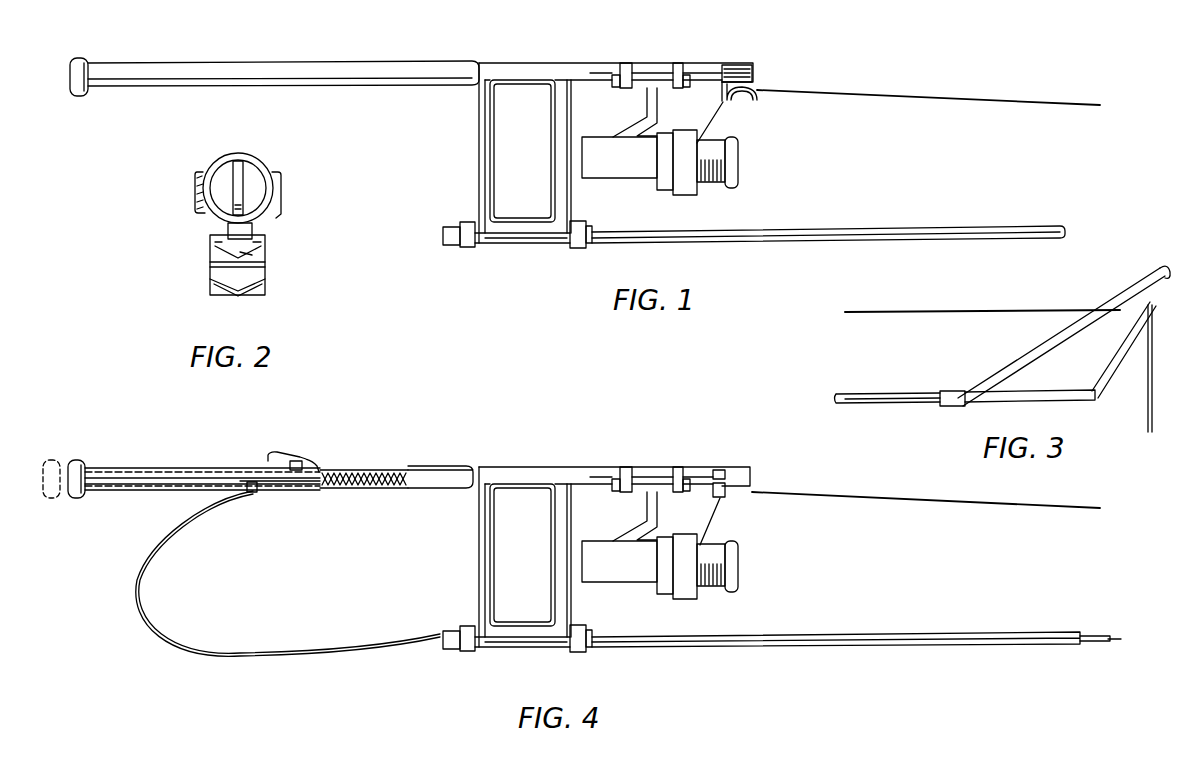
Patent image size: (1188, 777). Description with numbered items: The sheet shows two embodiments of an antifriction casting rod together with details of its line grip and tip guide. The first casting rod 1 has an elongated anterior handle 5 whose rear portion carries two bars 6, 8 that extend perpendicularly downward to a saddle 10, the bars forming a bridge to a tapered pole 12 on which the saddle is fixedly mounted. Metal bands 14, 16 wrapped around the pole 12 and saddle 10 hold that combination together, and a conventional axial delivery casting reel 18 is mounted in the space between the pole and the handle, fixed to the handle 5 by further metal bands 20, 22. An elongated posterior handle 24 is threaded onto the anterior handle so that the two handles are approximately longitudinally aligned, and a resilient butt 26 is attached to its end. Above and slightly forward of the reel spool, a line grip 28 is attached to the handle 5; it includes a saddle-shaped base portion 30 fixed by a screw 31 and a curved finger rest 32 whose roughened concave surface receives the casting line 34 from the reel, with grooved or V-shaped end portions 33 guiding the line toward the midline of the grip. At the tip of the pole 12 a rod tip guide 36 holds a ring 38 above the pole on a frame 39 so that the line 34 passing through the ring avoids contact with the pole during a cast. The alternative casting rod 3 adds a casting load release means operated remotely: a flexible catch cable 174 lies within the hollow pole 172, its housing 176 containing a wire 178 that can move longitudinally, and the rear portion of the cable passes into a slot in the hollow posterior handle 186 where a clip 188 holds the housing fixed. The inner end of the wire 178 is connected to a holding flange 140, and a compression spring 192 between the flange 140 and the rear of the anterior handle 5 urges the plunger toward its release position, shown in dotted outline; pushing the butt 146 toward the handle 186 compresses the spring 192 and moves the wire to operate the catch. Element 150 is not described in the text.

In FIG. 1, the antifriction casting rod 1 is at (415, 31).
In FIG. 4, the antifriction casting rod 3 is at (432, 431).
In FIG. 1, the anterior handle 5 is at (707, 63).
In FIG. 4, the anterior handle 5 is at (592, 467).
In FIG. 1, the bar 6 is at (478, 153).
In FIG. 1, the bar 8 is at (555, 153).
In FIG. 1, the saddle 10 is at (518, 221).
In FIG. 1, the tapered pole 12 is at (826, 231).
In FIG. 3, the tapered pole 12 is at (897, 399).
In FIG. 1, the metal band 14 is at (471, 248).
In FIG. 1, the metal band 16 is at (580, 248).
In FIG. 1, the axial delivery casting reel 18 is at (620, 178).
In FIG. 1, the metal band 20 is at (629, 63).
In FIG. 1, the metal band 22 is at (679, 63).
In FIG. 1, the posterior handle 24 is at (275, 62).
In FIG. 1, the butt 26 is at (88, 64).
In FIG. 1, the line grip 28 is at (770, 79).
In FIG. 2, the line grip 28 is at (300, 228).
In FIG. 1, the base portion 30 is at (741, 65).
In FIG. 2, the base portion 30 is at (199, 202).
In FIG. 2, the screw 31 is at (232, 175).
In FIG. 1, the finger rest 32 is at (742, 93).
In FIG. 2, the finger rest 32 is at (210, 280).
In FIG. 2, the V-shaped end portions 33 is at (262, 266).
In FIG. 1, the casting line 34 is at (963, 101).
In FIG. 3, the casting line 34 is at (942, 316).
In FIG. 4, the casting line 34 is at (926, 500).
In FIG. 3, the rod tip guide 36 is at (1150, 258).
In FIG. 3, the ring 38 is at (1151, 283).
In FIG. 3, the frame 39 is at (1112, 376).
In FIG. 4, the holding flange 140 is at (317, 494).
In FIG. 4, the butt 146 is at (82, 461).
In FIG. 4, the clamp lever 150 is at (280, 453).
In FIG. 4, the hollow pole 172 is at (693, 650).
In FIG. 4, the catch cable 174 is at (246, 669).
In FIG. 4, the cable housing 176 is at (1097, 646).
In FIG. 4, the wire 178 is at (300, 495).
In FIG. 4, the posterior handle 186 is at (173, 467).
In FIG. 4, the clip 188 is at (252, 494).
In FIG. 4, the compression spring 192 is at (370, 467).